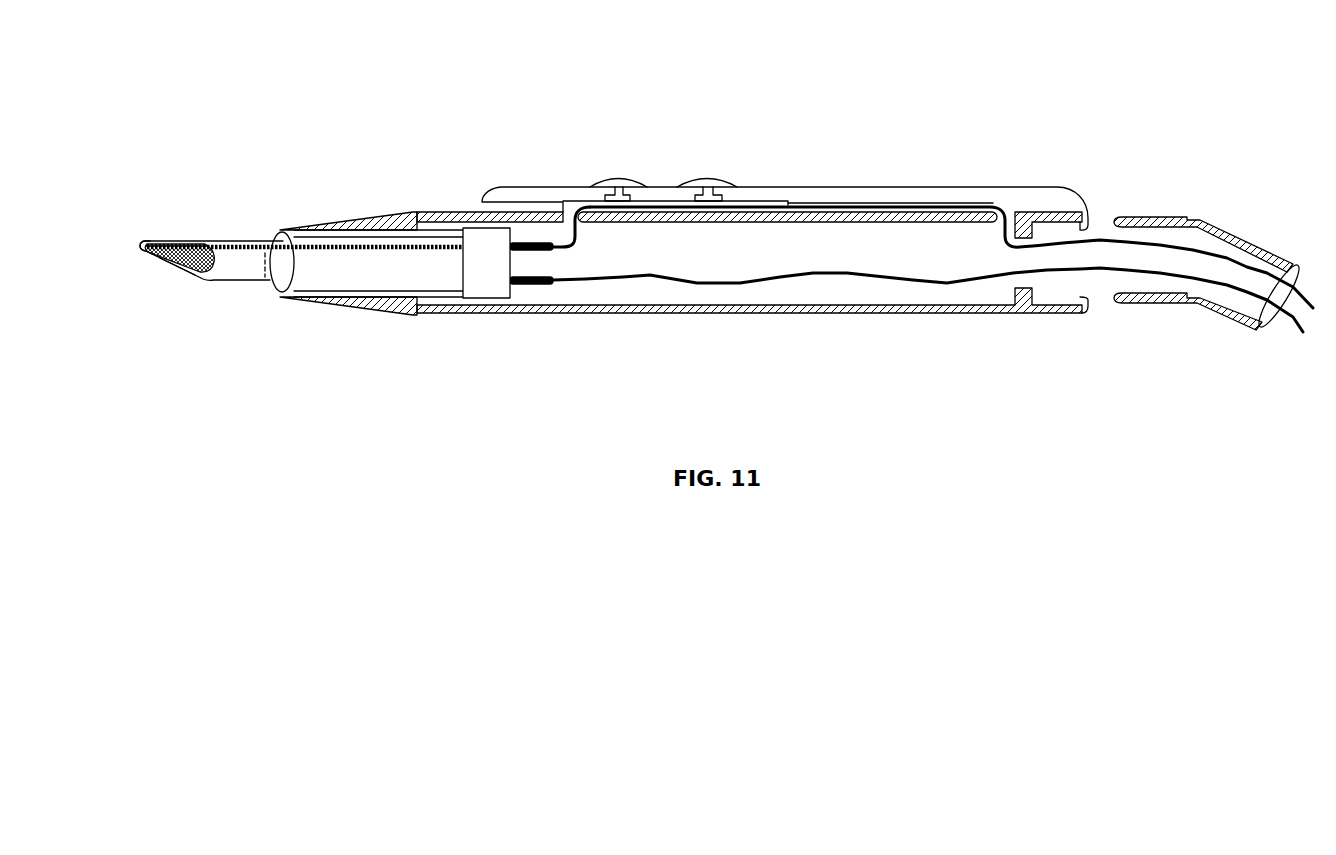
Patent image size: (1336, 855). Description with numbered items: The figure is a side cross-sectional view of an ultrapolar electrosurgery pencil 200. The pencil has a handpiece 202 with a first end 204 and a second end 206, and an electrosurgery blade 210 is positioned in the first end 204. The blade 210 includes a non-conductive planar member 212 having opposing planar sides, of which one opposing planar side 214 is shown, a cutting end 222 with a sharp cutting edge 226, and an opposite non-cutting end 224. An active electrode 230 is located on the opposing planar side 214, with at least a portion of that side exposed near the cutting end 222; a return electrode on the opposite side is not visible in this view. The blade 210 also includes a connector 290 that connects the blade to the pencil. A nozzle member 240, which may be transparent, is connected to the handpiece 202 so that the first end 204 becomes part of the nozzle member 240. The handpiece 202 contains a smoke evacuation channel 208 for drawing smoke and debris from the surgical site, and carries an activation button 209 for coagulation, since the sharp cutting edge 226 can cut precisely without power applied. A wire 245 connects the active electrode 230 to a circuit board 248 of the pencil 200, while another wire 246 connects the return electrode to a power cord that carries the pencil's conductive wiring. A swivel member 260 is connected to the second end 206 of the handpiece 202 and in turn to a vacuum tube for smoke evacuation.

The ultrapolar electrosurgery pencil 200 is at (808, 77).
The handpiece 202 is at (550, 317).
The first end 204 is at (275, 293).
The second end 206 is at (1090, 297).
The smoke evacuation channel 208 is at (697, 258).
The activation button 209 is at (693, 180).
The electrosurgery blade 210 is at (235, 239).
The non-conductive planar member 212 is at (260, 273).
The opposing planar side 214 is at (250, 272).
The cutting end 222 is at (137, 250).
The non-cutting end 224 is at (460, 263).
The sharp cutting edge 226 is at (168, 267).
The active electrode 230 is at (193, 273).
The nozzle member 240 is at (370, 310).
The wire 245 is at (850, 203).
The wire 246 is at (813, 280).
The circuit board 248 is at (730, 187).
The swivel member 260 is at (1163, 215).
The connector 290 is at (480, 282).